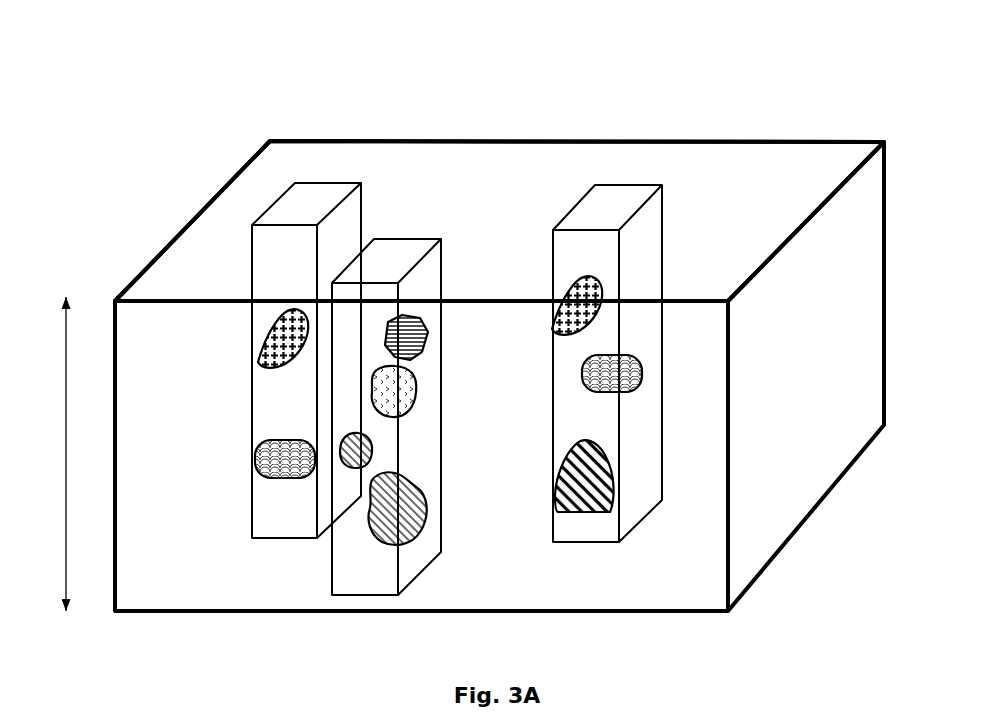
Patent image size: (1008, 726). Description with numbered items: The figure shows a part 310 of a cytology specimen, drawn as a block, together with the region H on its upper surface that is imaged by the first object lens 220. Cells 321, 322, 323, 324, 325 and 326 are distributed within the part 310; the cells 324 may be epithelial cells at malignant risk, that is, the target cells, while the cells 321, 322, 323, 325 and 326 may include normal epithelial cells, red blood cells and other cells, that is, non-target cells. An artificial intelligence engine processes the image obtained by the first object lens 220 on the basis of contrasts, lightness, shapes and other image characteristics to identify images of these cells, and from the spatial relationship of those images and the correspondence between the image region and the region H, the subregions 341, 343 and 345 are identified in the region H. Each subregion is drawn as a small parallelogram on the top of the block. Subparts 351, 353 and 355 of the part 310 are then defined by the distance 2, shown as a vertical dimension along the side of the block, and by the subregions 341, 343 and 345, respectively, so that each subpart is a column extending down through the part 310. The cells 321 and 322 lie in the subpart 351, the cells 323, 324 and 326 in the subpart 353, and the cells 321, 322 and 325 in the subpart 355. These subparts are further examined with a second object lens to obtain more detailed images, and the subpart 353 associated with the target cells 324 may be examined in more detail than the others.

The part of cytology specimen 310 is at (237, 108).
The first object lens 220 is at (118, 300).
The region H is at (520, 182).
The distance 2 is at (50, 454).
The subregion 341 is at (306, 360).
The subregion 343 is at (386, 417).
The subregion 345 is at (607, 363).
The cells 321 is at (257, 341).
The cells 322 is at (255, 468).
The cells 323 is at (412, 405).
The cells 324 is at (377, 451).
The cells 325 is at (602, 512).
The cells 326 is at (422, 352).
The subpart 351 is at (281, 525).
The subpart 353 is at (363, 574).
The subpart 355 is at (591, 532).